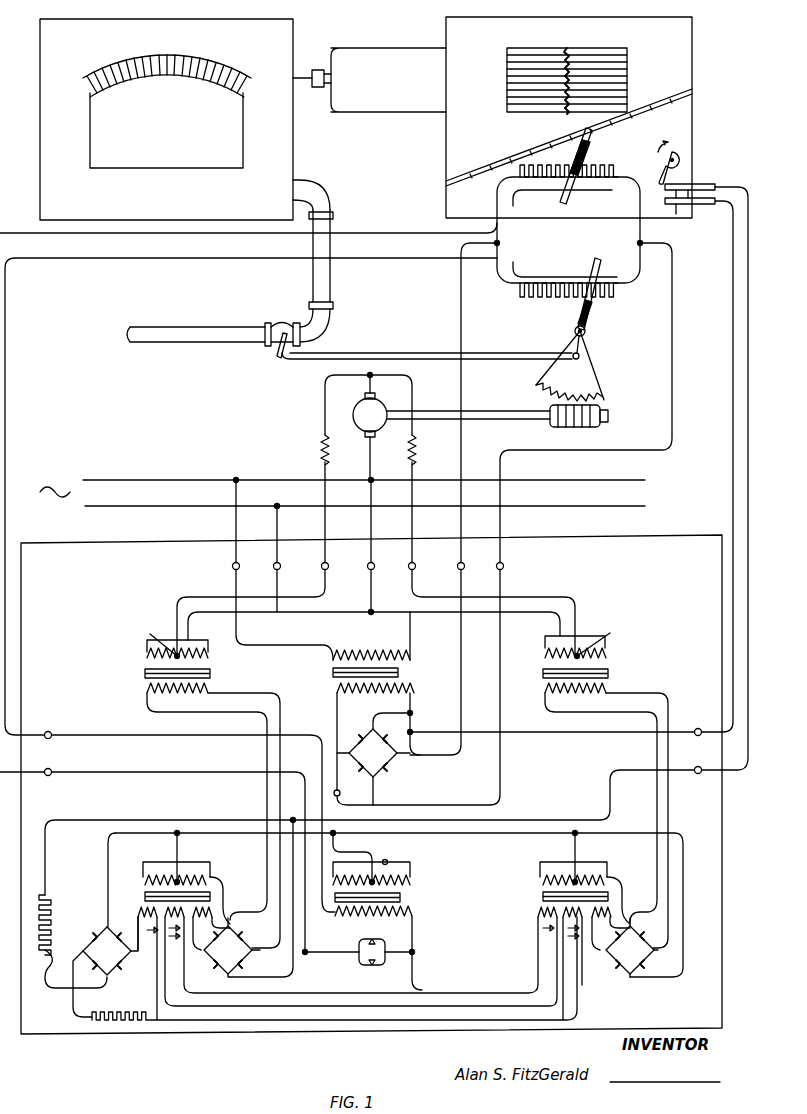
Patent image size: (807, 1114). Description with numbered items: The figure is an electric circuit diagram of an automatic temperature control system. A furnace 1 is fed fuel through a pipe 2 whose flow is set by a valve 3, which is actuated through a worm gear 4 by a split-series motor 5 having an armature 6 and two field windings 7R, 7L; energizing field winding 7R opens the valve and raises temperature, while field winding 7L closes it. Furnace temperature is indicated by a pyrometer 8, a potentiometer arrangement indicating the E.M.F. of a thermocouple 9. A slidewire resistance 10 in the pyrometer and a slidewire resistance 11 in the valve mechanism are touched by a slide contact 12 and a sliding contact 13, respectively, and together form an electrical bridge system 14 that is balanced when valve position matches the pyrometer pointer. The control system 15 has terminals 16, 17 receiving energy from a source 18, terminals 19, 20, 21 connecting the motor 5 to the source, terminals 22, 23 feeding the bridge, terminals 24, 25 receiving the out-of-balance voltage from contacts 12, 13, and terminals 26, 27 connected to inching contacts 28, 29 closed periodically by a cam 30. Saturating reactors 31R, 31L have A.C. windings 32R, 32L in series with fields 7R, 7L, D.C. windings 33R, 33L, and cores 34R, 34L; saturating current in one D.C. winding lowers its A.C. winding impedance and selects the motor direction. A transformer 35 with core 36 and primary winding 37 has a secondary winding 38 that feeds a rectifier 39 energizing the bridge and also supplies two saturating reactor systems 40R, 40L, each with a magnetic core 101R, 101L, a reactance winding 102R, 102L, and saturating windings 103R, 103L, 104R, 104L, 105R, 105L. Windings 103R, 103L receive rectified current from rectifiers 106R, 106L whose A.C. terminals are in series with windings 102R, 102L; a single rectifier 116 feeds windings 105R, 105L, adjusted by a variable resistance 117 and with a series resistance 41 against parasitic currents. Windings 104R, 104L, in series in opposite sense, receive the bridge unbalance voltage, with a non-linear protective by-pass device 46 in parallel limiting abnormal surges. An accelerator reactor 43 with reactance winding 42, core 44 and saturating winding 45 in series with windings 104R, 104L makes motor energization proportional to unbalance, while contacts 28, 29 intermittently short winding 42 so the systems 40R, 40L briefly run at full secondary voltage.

The furnace 1 is at (293, 35).
The pipe 2 is at (333, 221).
The valve 3 is at (279, 328).
The worm gear 4 is at (609, 402).
The motor 5 is at (330, 408).
The armature 6 is at (384, 406).
The field winding 7R is at (309, 450).
The field winding 7L is at (425, 450).
The pyrometer 8 is at (692, 35).
The thermocouple 9 is at (321, 79).
The slidewire resistance 10 is at (584, 172).
The slidewire resistance 11 is at (556, 301).
The slide contact 12 is at (568, 193).
The sliding contact 13 is at (598, 273).
The electrical bridge system 14 is at (566, 243).
The control system 15 is at (662, 541).
The terminal 16 is at (269, 569).
The terminal 17 is at (267, 558).
The source 18 is at (87, 496).
The terminal 19 is at (253, 559).
The terminal 20 is at (374, 559).
The terminal 21 is at (483, 559).
The terminal 22 is at (465, 580).
The terminal 23 is at (511, 585).
The terminal 24 is at (45, 726).
The terminal 25 is at (152, 861).
The terminal 26 is at (559, 723).
The terminal 27 is at (377, 831).
The inching contact 28 is at (694, 184).
The inching contact 29 is at (678, 212).
The cam 30 is at (686, 161).
The saturating reactor 31R is at (118, 663).
The saturating reactor 31L is at (664, 663).
The A. C. winding 32R is at (160, 638).
The A. C. winding 32L is at (594, 637).
The D. C. winding 33R is at (213, 815).
The D. C. winding 33L is at (606, 815).
The core 34R is at (212, 673).
The core 34L is at (542, 673).
The transformer 35 is at (318, 663).
The core 36 is at (400, 672).
The primary winding 37 is at (371, 636).
The secondary winding 38 is at (377, 739).
The rectifier 39 is at (373, 759).
The saturating reactor system 40R is at (190, 815).
The saturating reactor system 40L is at (585, 815).
The resistance 41 is at (334, 968).
The reactance winding 42 is at (410, 870).
The saturating reactor 43 is at (462, 908).
The core 44 is at (410, 900).
The direct-current saturating winding 45 is at (410, 915).
The protective by-pass device 46 is at (359, 952).
The magnetic core 101R is at (210, 895).
The magnetic core 101L is at (608, 895).
The reactance winding 102R is at (190, 877).
The reactance winding 102L is at (588, 877).
The direct-current saturating winding 103R is at (213, 913).
The direct-current saturating winding 103L is at (612, 915).
The direct-current saturating winding 104R is at (173, 945).
The direct-current saturating winding 104L is at (577, 975).
The direct-current saturating winding 105R is at (148, 940).
The direct-current saturating winding 105L is at (527, 919).
The rectifier 106R is at (248, 898).
The rectifier 106L is at (632, 947).
The rectifier 116 is at (105, 967).
The variable resistance 117 is at (73, 936).